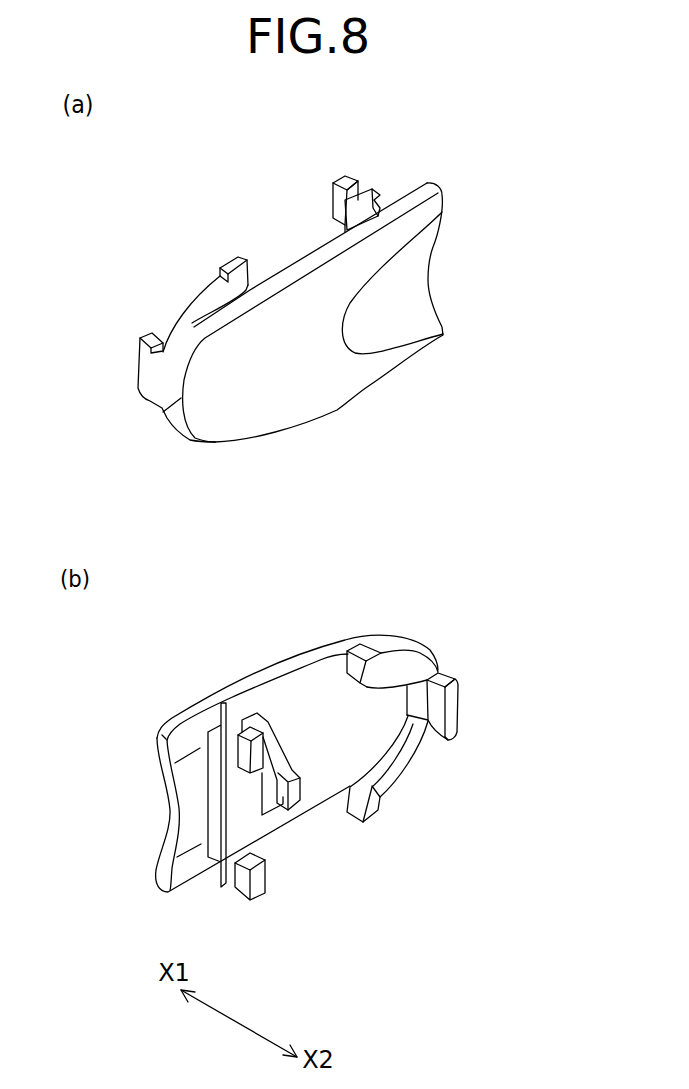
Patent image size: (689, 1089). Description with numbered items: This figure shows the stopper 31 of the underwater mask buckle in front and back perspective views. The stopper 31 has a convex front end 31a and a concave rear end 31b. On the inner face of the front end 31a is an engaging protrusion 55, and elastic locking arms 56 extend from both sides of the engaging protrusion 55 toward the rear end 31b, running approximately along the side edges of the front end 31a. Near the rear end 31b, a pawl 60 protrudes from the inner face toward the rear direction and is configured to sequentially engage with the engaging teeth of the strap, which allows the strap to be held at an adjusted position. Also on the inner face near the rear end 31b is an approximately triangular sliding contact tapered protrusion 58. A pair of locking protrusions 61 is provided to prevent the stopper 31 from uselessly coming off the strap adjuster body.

The stopper 31 is at (487, 306).
The convex front end 31a is at (163, 414).
The concave rear end 31b is at (429, 266).
The engaging protrusion 55 is at (145, 372).
The elastic locking arms 56 is at (250, 268).
The sliding contact tapered protrusion 58 is at (273, 760).
The pawl 60 is at (378, 195).
The locking protrusions 61 is at (338, 180).